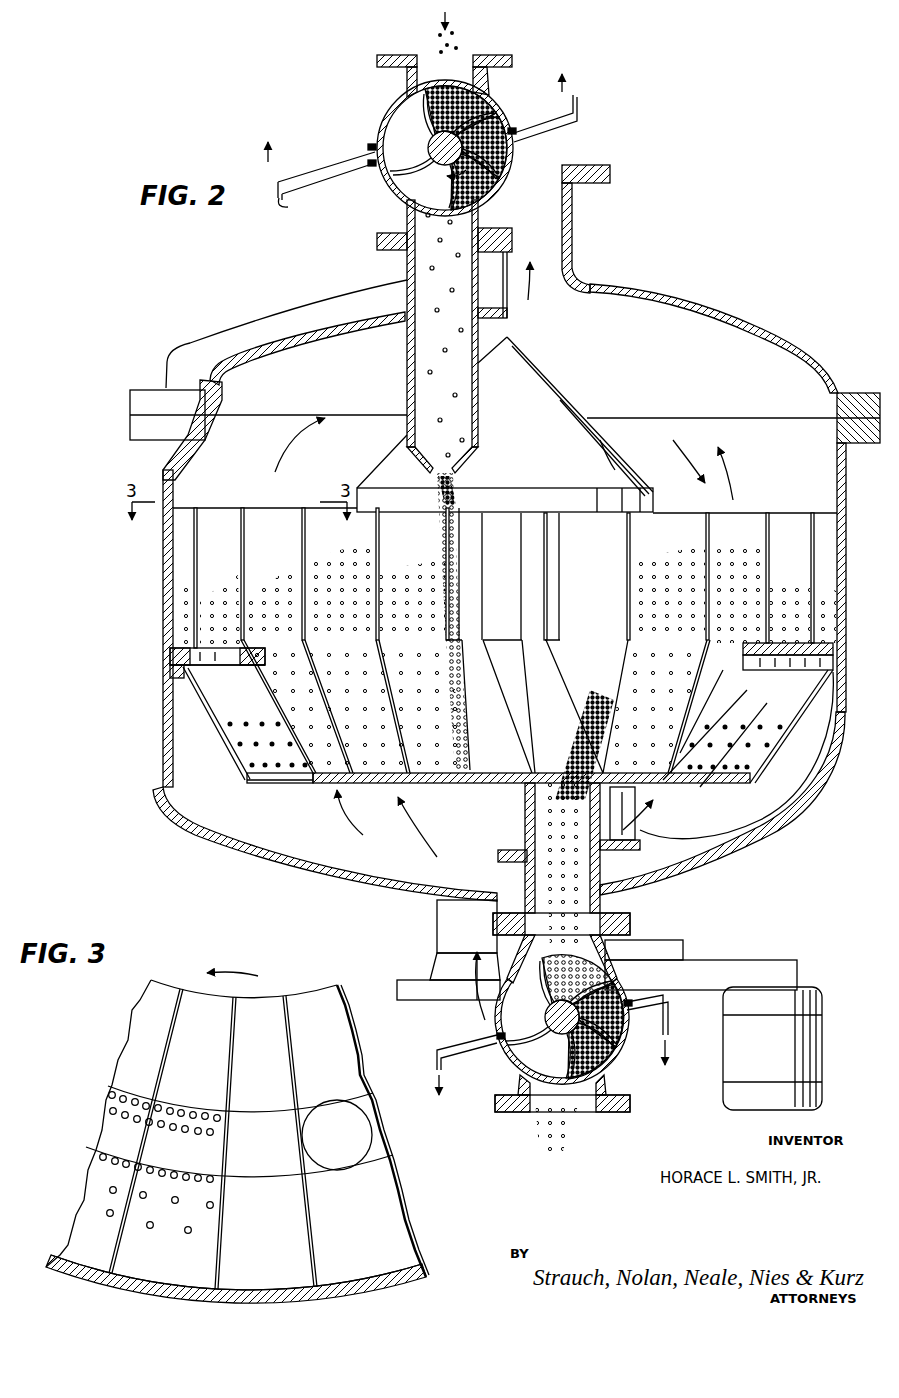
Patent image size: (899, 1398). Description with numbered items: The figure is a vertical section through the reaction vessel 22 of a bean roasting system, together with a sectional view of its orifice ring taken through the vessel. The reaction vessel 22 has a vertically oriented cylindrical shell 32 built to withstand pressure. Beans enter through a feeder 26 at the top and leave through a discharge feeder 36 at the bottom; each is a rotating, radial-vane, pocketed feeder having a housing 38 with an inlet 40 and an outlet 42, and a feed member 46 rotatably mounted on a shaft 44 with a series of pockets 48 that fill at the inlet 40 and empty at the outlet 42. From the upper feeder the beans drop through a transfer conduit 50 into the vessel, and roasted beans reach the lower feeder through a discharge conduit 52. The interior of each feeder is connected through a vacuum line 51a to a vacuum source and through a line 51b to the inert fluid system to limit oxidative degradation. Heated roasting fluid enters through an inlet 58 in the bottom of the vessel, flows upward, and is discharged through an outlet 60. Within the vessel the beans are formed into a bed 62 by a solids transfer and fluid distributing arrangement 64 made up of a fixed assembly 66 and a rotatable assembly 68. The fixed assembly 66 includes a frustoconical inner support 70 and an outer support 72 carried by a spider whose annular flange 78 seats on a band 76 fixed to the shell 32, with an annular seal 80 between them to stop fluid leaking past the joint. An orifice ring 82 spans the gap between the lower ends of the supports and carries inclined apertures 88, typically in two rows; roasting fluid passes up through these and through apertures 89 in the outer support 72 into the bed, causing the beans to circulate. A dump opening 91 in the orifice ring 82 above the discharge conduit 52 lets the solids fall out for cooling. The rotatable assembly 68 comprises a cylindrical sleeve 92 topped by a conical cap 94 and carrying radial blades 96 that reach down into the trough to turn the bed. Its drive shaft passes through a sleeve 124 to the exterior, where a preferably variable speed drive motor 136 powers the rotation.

In FIG. 2, the reaction vessel 22 is at (192, 335).
In FIG. 2, the feeder 26 is at (370, 152).
In FIG. 2, the shell 32 is at (163, 580).
In FIG. 3, the shell 32 is at (110, 1286).
In FIG. 2, the discharge feeder 36 is at (640, 1028).
In FIG. 2, the housing 38 is at (503, 102).
In FIG. 2, the inlet 40 is at (460, 66).
In FIG. 2, the outlet 42 is at (420, 222).
In FIG. 2, the shaft 44 is at (432, 140).
In FIG. 2, the feed member 46 is at (372, 142).
In FIG. 2, the pockets 48 is at (505, 170).
In FIG. 2, the transfer conduit 50 is at (404, 372).
In FIG. 2, the vacuum line 51a is at (578, 116).
In FIG. 2, the line 51b is at (684, 1040).
In FIG. 2, the discharge conduit 52 is at (526, 828).
In FIG. 2, the inlet 58 is at (437, 920).
In FIG. 2, the outlet 60 is at (571, 220).
In FIG. 2, the bed 62 is at (345, 518).
In FIG. 2, the solids transfer and fluid distributing arrangement 64 is at (695, 462).
In FIG. 3, the solids transfer and fluid distributing arrangement 64 is at (100, 1108).
In FIG. 2, the fixed assembly 66 is at (208, 735).
In FIG. 2, the rotatable assembly 68 is at (230, 506).
In FIG. 3, the inner support 70 is at (315, 998).
In FIG. 2, the outer support 72 is at (225, 700).
In FIG. 3, the outer support 72 is at (395, 1290).
In FIG. 2, the band 76 is at (170, 676).
In FIG. 2, the annular flange 78 is at (170, 650).
In FIG. 2, the annular seal 80 is at (170, 660).
In FIG. 2, the orifice ring 82 is at (313, 786).
In FIG. 3, the orifice ring 82 is at (122, 1135).
In FIG. 2, the apertures 88 is at (338, 790).
In FIG. 3, the apertures 88 is at (184, 1120).
In FIG. 2, the apertures 89 is at (690, 748).
In FIG. 3, the dump opening 91 is at (360, 1114).
In FIG. 2, the sleeve 92 is at (652, 500).
In FIG. 2, the conical cap 94 is at (548, 382).
In FIG. 2, the blades 96 is at (552, 512).
In FIG. 3, the blades 96 is at (222, 1040).
In FIG. 2, the sleeve 124 is at (638, 832).
In FIG. 2, the drive motor 136 is at (765, 1054).